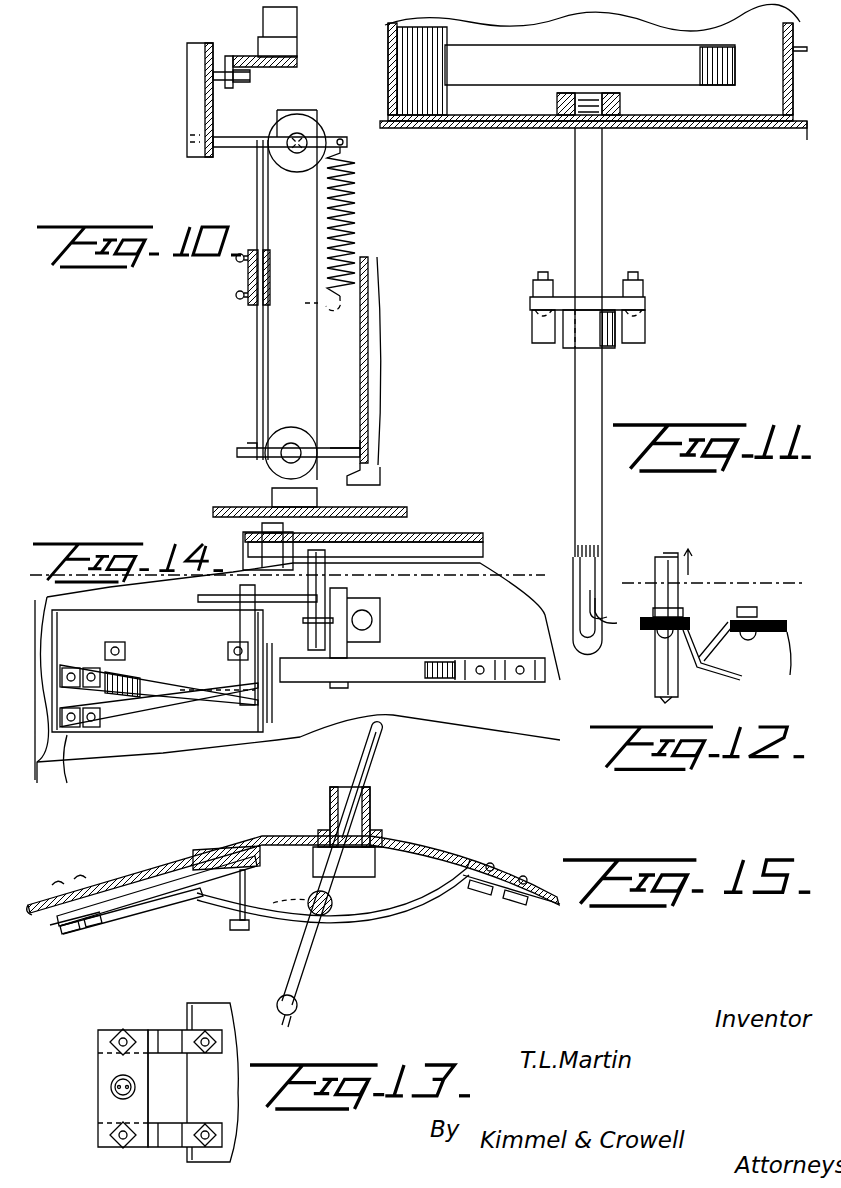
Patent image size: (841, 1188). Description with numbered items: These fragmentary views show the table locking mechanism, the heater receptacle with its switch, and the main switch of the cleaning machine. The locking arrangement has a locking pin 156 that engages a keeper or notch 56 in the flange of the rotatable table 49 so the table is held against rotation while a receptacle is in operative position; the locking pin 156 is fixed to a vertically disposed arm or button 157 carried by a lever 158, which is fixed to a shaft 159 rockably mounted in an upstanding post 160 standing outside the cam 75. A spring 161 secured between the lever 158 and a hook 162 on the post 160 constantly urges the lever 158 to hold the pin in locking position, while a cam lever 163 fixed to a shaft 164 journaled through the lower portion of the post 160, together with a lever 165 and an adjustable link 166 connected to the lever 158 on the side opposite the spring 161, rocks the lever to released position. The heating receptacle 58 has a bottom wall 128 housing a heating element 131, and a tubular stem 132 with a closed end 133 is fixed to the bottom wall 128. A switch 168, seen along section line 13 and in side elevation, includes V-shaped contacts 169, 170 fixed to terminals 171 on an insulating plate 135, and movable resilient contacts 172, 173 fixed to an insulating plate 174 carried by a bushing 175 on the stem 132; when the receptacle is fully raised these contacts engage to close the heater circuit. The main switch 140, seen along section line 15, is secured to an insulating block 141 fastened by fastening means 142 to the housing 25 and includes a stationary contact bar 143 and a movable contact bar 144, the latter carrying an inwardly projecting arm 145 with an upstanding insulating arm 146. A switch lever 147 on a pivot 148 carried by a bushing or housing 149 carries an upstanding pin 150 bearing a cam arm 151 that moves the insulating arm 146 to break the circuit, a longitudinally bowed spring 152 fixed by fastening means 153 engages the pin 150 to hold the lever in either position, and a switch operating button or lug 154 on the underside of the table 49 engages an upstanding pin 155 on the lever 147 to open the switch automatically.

In FIG. 12, the section line 13— 13 is at (794, 591).
In FIG. 14, the section line 15— 15 is at (534, 586).
In FIG. 15, the housing 25 is at (433, 846).
In FIG. 10, the receptacle carrier or table 49 is at (246, 47).
In FIG. 14, the receptacle carrier or table 49 is at (444, 529).
In FIG. 10, the keeper or notch 56 is at (230, 88).
In FIG. 11, the drying or heating receptacle 58 is at (380, 58).
In FIG. 10, the rotatable cam 75 is at (377, 374).
In FIG. 11, the bottom wall 128 is at (503, 128).
In FIG. 11, the heating element 131 is at (707, 80).
In FIG. 11, the tubular stem 132 is at (597, 228).
In FIG. 13, the tubular stem 132 is at (110, 1087).
In FIG. 11, the closed end 133 is at (587, 650).
In FIG. 12, the insulating plate 135 is at (773, 633).
In FIG. 13, the insulating plate 135 is at (233, 1113).
In FIG. 15, the main switch 140 is at (142, 908).
In FIG. 15, the insulating block 141 is at (222, 843).
In FIG. 15, the fastening means 142 is at (80, 877).
In FIG. 14, the stationary contact bar 143 is at (180, 707).
In FIG. 15, the stationary contact bar 143 is at (178, 887).
In FIG. 14, the movable contact bar 144 is at (140, 687).
In FIG. 15, the movable contact bar 144 is at (185, 890).
In FIG. 15, the inwardly projecting arm 145 is at (297, 892).
In FIG. 14, the upstanding insulating arm 146 is at (243, 625).
In FIG. 15, the upstanding insulating arm 146 is at (262, 928).
In FIG. 14, the switch lever 147 is at (377, 620).
In FIG. 15, the switch lever 147 is at (380, 750).
In FIG. 15, the pivot 148 is at (370, 813).
In FIG. 15, the bushing or housing 149 is at (332, 807).
In FIG. 14, the upstanding pin 150 is at (353, 652).
In FIG. 14, the cam arm 151 is at (225, 598).
In FIG. 15, the cam arm 151 is at (248, 920).
In FIG. 14, the longitudinally bowed spring 152 is at (395, 677).
In FIG. 15, the longitudinally bowed spring 152 is at (383, 920).
In FIG. 15, the fastening means 153 is at (523, 877).
In FIG. 14, the switch operating button or lug 154 is at (250, 547).
In FIG. 14, the upstanding pin 155 is at (330, 557).
In FIG. 15, the upstanding pin 155 is at (297, 1005).
In FIG. 10, the locking pin 156 is at (280, 119).
In FIG. 10, the vertically disposed arm or button 157 is at (195, 60).
In FIG. 10, the lever 158 is at (233, 148).
In FIG. 10, the shaft 159 is at (298, 133).
In FIG. 10, the upstanding post 160 is at (285, 205).
In FIG. 10, the spring 161 is at (348, 205).
In FIG. 10, the hook 162 is at (328, 311).
In FIG. 10, the cam lever 163 is at (330, 447).
In FIG. 10, the shaft 164 is at (292, 447).
In FIG. 10, the lever 165 is at (250, 443).
In FIG. 10, the adjustable link 166 is at (257, 358).
In FIG. 12, the switch 168 is at (712, 608).
In FIG. 12, the contact 169 is at (697, 667).
In FIG. 13, the contact 169 is at (170, 1120).
In FIG. 12, the contact 170 is at (747, 663).
In FIG. 13, the contact 170 is at (170, 1032).
In FIG. 12, the terminals 171 is at (752, 595).
In FIG. 11, the movable resilient contact 172 is at (540, 350).
In FIG. 13, the movable resilient contact 172 is at (153, 1148).
In FIG. 11, the movable resilient contact 173 is at (637, 347).
In FIG. 13, the movable resilient contact 173 is at (157, 1027).
In FIG. 11, the insulating plate 174 is at (660, 297).
In FIG. 13, the insulating plate 174 is at (107, 1112).
In FIG. 11, the bushing 175 is at (570, 350).